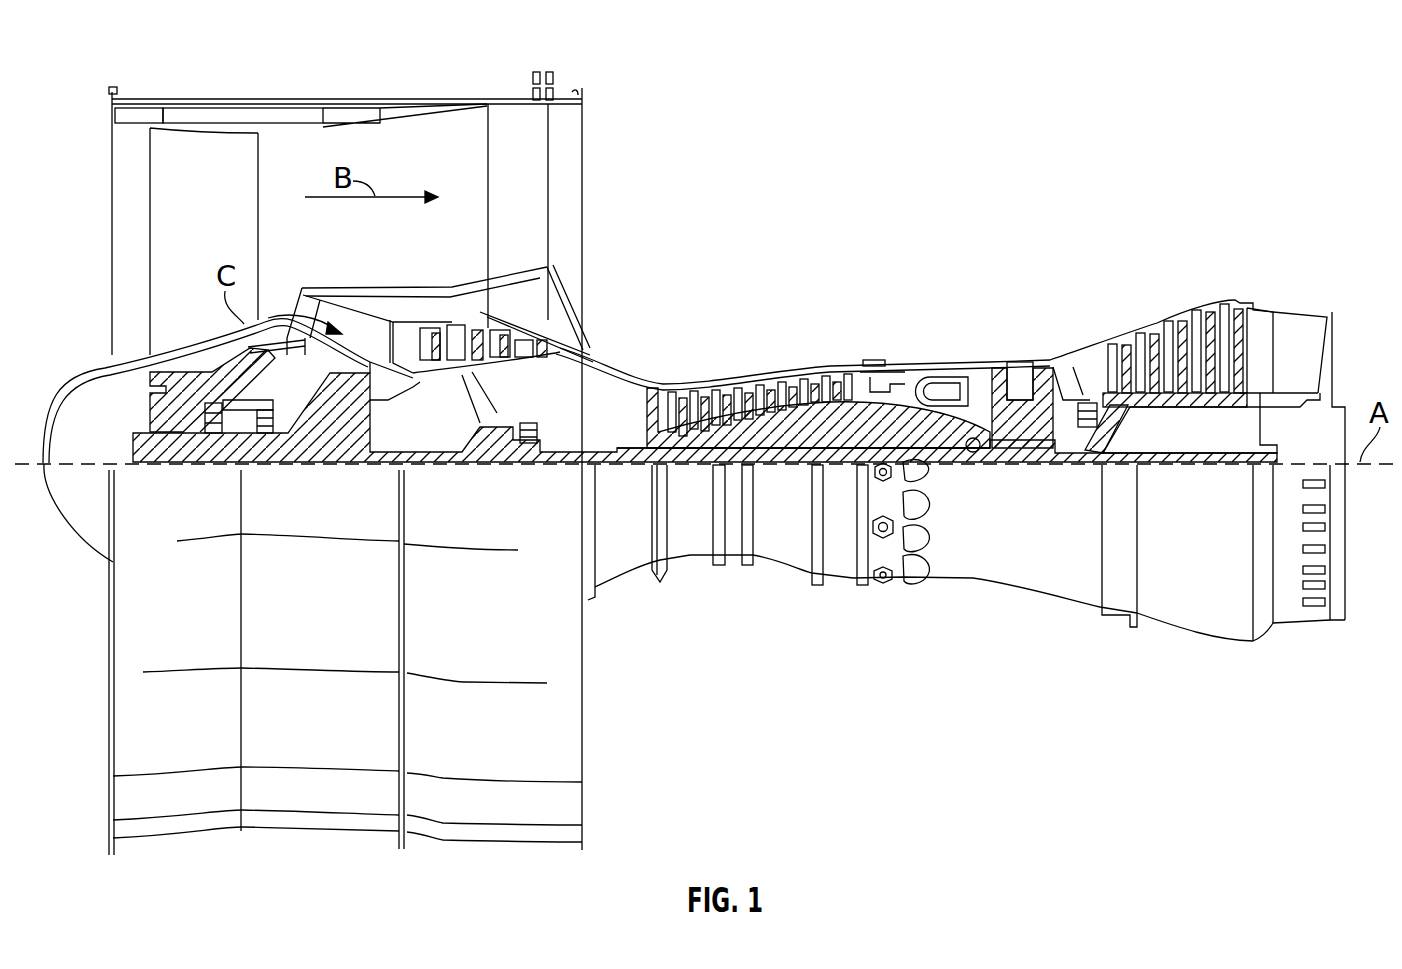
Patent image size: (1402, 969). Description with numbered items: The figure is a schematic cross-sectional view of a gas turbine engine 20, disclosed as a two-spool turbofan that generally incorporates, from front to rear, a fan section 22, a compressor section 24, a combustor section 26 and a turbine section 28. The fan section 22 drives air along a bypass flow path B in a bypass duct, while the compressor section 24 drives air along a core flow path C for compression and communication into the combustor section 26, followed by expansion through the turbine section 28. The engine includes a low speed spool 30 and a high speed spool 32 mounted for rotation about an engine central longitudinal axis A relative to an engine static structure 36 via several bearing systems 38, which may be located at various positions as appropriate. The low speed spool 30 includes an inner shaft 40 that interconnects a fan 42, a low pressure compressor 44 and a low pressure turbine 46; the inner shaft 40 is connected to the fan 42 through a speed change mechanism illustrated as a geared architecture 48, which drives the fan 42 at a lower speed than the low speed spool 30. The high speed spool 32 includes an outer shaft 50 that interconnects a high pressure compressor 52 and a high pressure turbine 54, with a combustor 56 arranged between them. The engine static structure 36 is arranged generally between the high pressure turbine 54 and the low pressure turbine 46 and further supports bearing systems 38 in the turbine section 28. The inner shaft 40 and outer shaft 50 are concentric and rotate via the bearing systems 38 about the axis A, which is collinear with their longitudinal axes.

The gas turbine engine 20 is at (1220, 66).
The fan section 22 is at (230, 95).
The compressor section 24 is at (688, 246).
The combustor section 26 is at (890, 228).
The turbine section 28 is at (1088, 233).
The low speed spool 30 is at (800, 478).
The high speed spool 32 is at (858, 420).
The engine static structure 36 is at (848, 588).
The bearing systems 38 is at (208, 436).
The inner shaft 40 is at (637, 470).
The fan 42 is at (217, 234).
The low pressure compressor 44 is at (500, 343).
The low pressure turbine 46 is at (1188, 335).
The geared architecture 48 is at (340, 432).
The outer shaft 50 is at (976, 455).
The high pressure compressor 52 is at (762, 435).
The high pressure turbine 54 is at (1020, 365).
The combustor 56 is at (940, 388).